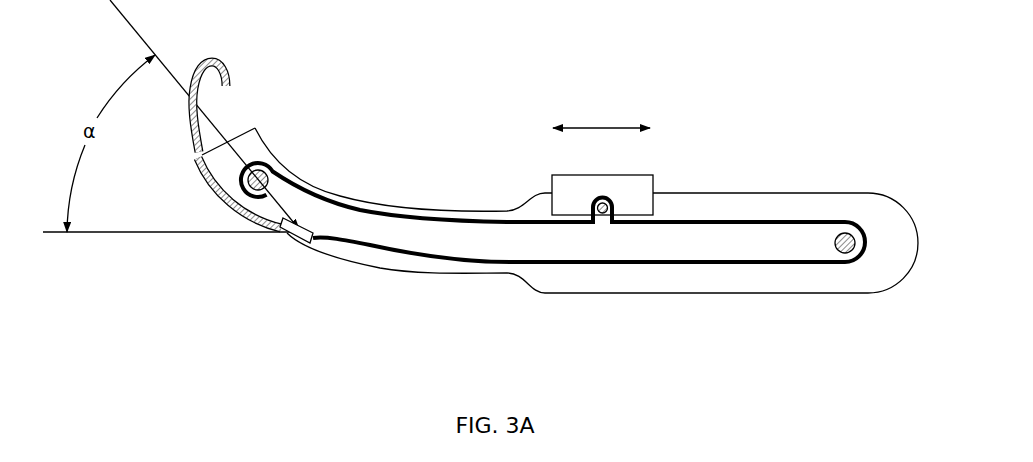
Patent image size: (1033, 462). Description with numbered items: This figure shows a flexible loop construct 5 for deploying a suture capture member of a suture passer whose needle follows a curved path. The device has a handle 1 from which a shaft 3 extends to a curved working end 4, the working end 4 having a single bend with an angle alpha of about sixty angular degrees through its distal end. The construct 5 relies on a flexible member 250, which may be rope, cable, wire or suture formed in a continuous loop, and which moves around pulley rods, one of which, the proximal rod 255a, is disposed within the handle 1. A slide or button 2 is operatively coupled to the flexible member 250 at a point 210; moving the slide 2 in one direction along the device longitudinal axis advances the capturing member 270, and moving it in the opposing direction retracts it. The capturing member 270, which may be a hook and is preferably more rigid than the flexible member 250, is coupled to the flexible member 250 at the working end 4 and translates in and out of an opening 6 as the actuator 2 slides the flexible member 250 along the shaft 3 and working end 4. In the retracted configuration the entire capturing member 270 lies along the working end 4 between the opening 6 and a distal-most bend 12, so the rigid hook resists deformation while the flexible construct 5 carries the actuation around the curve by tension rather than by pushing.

The handle 1 is at (807, 293).
The slide or button 2 is at (655, 180).
The shaft 3 is at (390, 268).
The working end 4 is at (310, 150).
The flexible construct 5 is at (723, 263).
The opening 6 is at (246, 110).
The distal-most bend 12 is at (338, 262).
The point 210 is at (608, 215).
The flexible member 250 is at (637, 263).
The proximal rod 255a is at (855, 250).
The capturing member 270 is at (207, 56).